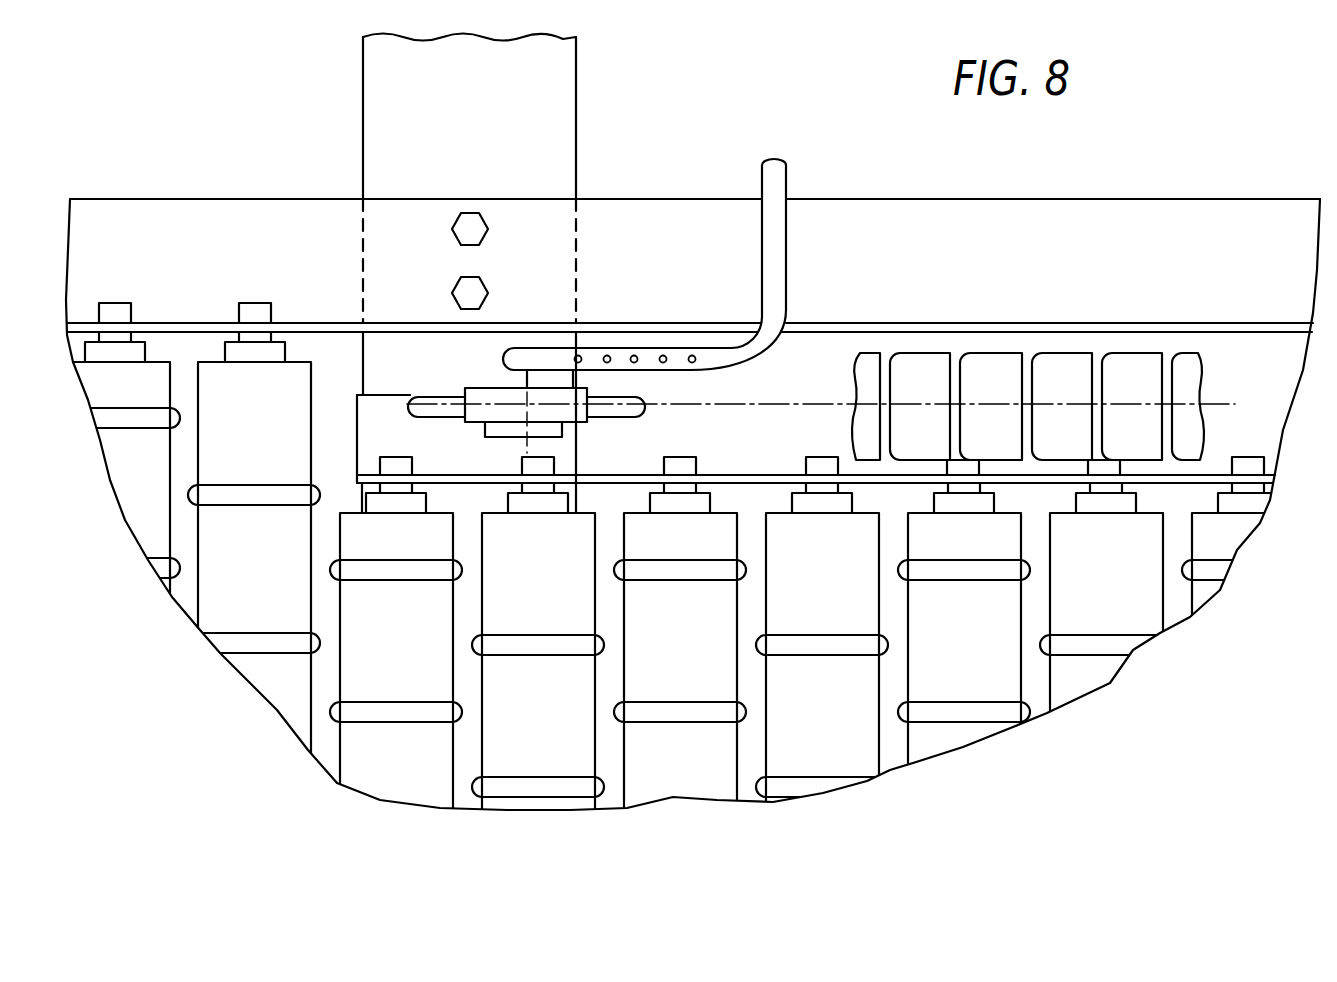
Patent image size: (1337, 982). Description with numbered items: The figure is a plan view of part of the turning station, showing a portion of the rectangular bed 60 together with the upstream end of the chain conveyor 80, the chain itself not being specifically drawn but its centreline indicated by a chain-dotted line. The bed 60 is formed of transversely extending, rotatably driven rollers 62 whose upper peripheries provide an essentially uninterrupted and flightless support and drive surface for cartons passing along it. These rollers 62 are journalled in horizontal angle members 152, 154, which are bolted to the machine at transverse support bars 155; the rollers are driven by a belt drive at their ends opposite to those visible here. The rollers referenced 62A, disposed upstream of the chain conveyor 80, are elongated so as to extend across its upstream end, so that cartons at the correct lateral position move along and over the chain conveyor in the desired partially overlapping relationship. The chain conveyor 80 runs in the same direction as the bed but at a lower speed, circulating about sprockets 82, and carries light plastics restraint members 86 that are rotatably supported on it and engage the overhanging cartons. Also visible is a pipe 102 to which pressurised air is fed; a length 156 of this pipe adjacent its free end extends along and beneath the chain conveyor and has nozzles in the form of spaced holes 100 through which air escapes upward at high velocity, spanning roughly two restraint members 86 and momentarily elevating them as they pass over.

The rectangular bed 60 is at (330, 750).
The rollers 62 is at (817, 762).
The elongated rollers 62A is at (215, 543).
The chain conveyor 80 is at (790, 397).
The sprockets 82 is at (481, 392).
The restraint members 86 is at (1125, 367).
The holes 100 is at (664, 365).
The pipe 102 is at (790, 181).
The horizontal angle member 152 is at (202, 228).
The horizontal angle member 154 is at (388, 432).
The transverse support bars 155 is at (537, 178).
The length of pipe 156 is at (621, 348).